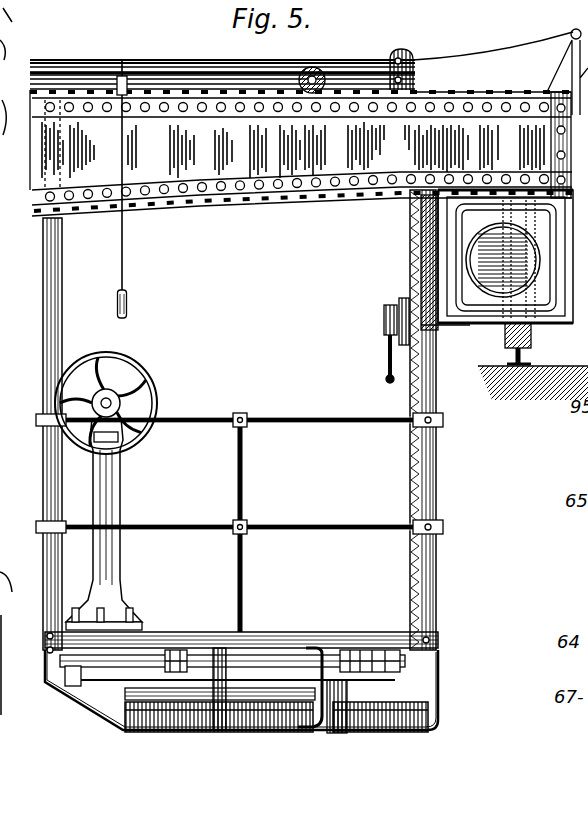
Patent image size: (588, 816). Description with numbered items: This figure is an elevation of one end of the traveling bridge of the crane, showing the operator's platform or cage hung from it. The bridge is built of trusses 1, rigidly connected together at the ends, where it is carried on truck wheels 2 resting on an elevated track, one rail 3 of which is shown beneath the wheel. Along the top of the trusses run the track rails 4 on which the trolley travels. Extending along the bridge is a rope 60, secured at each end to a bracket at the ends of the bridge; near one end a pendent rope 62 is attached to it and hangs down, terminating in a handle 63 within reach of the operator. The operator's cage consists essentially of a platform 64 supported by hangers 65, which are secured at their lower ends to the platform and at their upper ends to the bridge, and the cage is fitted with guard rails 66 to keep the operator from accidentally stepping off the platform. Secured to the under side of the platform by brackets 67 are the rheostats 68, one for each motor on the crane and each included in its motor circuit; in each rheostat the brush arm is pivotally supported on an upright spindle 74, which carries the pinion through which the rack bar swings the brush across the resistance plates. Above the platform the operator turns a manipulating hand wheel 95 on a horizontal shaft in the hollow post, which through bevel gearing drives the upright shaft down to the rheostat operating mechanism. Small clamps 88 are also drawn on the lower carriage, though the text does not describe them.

The truss 1 is at (192, 154).
The truck wheel 2 is at (532, 338).
The rail 3 is at (518, 366).
The track rail 4 is at (185, 63).
The rope 60 is at (440, 62).
The pendent rope 62 is at (126, 155).
The handle 63 is at (128, 302).
The platform 64 is at (282, 623).
The hanger 65 is at (44, 378).
The guard rail 66 is at (218, 418).
The bracket 67 is at (97, 716).
The rheostat 68 is at (183, 722).
The upright spindle 74 is at (330, 716).
The clamps 88 is at (203, 655).
The manipulating hand wheel 95 is at (149, 376).